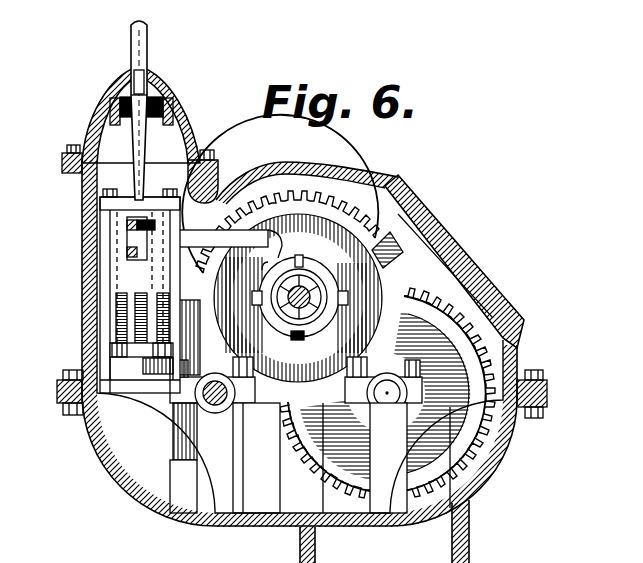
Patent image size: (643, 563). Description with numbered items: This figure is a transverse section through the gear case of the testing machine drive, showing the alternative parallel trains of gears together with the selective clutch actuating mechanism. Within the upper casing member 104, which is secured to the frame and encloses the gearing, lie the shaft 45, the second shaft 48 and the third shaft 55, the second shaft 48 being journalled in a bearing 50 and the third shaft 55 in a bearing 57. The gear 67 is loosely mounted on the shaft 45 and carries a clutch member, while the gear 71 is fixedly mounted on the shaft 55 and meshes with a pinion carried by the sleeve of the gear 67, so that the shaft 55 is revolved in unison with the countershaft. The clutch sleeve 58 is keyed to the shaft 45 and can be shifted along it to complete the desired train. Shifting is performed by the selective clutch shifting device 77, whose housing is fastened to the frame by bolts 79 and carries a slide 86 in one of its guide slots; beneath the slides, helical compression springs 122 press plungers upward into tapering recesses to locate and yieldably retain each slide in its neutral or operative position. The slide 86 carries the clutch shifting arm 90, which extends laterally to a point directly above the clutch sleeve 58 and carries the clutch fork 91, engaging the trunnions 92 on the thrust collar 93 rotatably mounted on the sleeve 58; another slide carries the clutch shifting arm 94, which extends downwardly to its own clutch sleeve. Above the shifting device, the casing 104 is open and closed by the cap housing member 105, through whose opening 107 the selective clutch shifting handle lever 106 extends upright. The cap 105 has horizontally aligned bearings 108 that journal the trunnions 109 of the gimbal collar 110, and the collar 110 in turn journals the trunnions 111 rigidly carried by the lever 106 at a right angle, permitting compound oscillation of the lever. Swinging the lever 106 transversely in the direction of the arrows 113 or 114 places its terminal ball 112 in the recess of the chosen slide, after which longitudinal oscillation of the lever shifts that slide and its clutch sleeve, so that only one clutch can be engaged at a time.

The shaft 45 is at (322, 258).
The second shaft 48 is at (176, 425).
The bearing 50 is at (187, 392).
The third shaft 55 is at (388, 406).
The bearing 57 is at (452, 318).
The clutch sleeve 58 is at (345, 283).
The gear 67 is at (352, 262).
The gear 71 is at (483, 363).
The selective clutch shifting device 77 is at (102, 228).
The bolts 79 is at (150, 367).
The slide 86 is at (143, 241).
The clutch shifting arm 90 is at (224, 231).
The clutch fork 91 is at (269, 261).
The trunnions 92 is at (262, 300).
The thrust collar 93 is at (290, 333).
The clutch shifting arm 94 is at (190, 325).
The upper casing member 104 is at (324, 168).
The cap housing member 105 is at (200, 134).
The selective clutch shifting handle lever 106 is at (147, 36).
The opening 107 is at (150, 74).
The bearings 108 is at (98, 136).
The trunnions 109 is at (112, 112).
The gimbal collar 110 is at (118, 97).
The trunnions 111 is at (153, 80).
The terminal ball 112 is at (108, 210).
The arrow 113 is at (190, 20).
The arrow 114 is at (190, 20).
The helical compression springs 122 is at (143, 321).